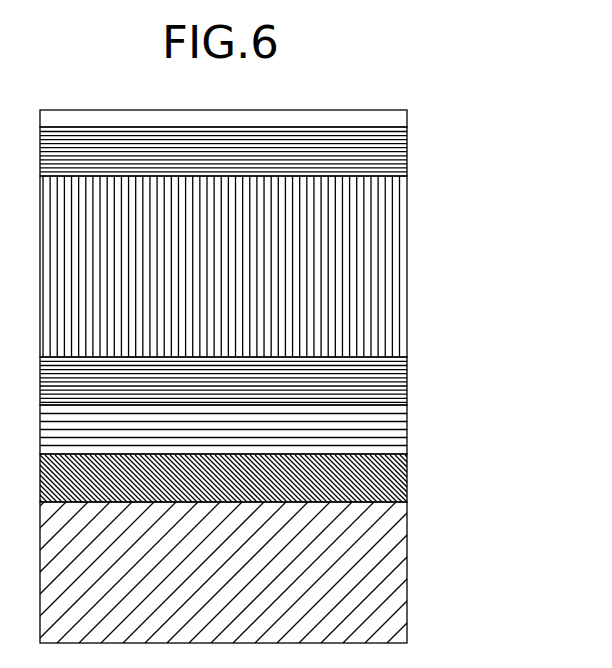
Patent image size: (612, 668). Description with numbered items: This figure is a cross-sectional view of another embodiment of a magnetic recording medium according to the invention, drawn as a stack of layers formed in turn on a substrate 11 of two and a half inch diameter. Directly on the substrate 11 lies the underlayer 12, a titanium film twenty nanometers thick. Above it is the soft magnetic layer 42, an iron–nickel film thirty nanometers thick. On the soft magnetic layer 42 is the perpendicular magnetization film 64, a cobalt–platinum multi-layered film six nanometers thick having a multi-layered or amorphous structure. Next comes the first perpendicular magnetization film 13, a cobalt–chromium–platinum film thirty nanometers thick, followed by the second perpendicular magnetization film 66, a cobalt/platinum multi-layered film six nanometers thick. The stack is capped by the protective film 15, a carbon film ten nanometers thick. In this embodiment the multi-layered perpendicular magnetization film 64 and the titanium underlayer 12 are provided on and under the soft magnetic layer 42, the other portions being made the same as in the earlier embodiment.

The substrate 11 is at (400, 560).
The underlayer 12 is at (400, 476).
The soft magnetic layer 42 is at (397, 425).
The perpendicular magnetization film 64 is at (400, 380).
The first perpendicular magnetization film 13 is at (397, 241).
The second perpendicular magnetization film 66 is at (398, 149).
The protective film 15 is at (396, 121).